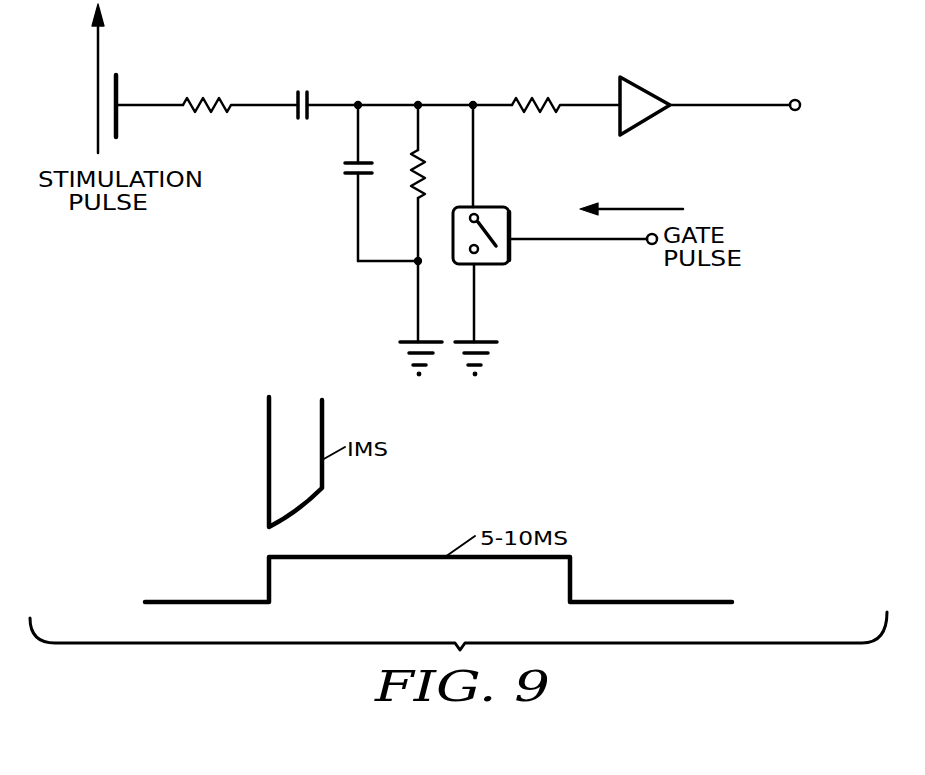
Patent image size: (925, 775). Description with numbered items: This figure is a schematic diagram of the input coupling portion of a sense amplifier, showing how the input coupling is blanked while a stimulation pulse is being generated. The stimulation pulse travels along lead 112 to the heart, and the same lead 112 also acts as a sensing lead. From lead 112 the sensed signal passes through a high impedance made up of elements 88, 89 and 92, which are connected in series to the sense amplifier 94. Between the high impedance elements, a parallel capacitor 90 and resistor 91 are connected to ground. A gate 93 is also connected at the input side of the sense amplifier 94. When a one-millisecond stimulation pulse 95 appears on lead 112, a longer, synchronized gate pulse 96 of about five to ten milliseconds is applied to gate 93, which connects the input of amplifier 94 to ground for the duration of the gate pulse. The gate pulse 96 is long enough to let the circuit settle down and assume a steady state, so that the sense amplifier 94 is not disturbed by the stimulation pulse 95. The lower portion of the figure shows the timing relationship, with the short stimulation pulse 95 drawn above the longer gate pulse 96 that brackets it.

The lead 112 is at (124, 92).
The high impedance 88 is at (226, 98).
The high impedance 89 is at (310, 96).
The parallel capacitor 90 is at (345, 176).
The resistor 91 is at (424, 188).
The high impedance 92 is at (536, 98).
The gate 93 is at (511, 255).
The sense amplifier 94 is at (657, 98).
The stimulation pulse 95 is at (268, 455).
The gate pulse 96 is at (396, 538).